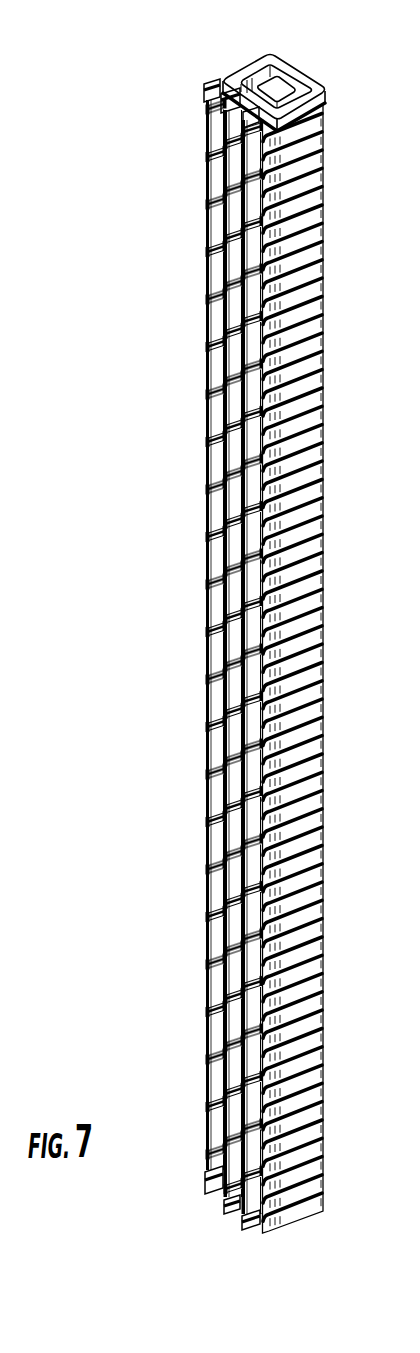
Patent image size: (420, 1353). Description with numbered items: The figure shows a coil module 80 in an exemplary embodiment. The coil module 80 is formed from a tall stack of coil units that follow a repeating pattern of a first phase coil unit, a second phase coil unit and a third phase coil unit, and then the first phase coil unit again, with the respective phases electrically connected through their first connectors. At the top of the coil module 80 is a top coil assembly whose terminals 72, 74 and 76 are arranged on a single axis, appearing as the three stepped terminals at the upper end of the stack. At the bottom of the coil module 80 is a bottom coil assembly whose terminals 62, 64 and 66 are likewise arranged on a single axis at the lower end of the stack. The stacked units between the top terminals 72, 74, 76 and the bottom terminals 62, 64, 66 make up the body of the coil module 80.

The coil module 80 is at (218, 62).
The terminal 72 is at (204, 88).
The terminal 74 is at (233, 103).
The terminal 76 is at (263, 123).
The terminal 62 is at (207, 1189).
The terminal 64 is at (224, 1203).
The terminal 66 is at (247, 1220).